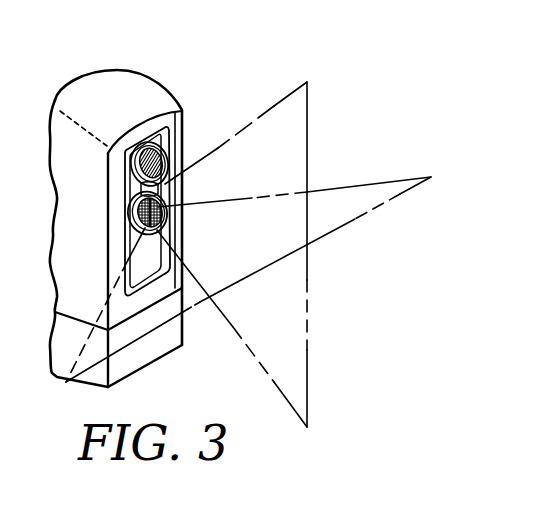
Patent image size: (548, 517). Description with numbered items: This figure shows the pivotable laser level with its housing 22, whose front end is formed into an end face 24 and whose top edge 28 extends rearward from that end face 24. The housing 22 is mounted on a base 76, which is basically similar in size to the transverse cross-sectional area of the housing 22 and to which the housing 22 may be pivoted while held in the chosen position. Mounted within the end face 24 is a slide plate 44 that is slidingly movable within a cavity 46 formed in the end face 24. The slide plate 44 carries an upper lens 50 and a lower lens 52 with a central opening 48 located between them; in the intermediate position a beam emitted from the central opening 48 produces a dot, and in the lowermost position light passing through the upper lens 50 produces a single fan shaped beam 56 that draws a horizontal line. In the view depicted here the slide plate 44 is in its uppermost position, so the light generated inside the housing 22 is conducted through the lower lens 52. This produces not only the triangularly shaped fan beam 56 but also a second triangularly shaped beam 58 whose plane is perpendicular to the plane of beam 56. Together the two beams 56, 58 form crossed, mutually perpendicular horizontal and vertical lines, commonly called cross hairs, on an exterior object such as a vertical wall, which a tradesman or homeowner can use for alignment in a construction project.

The housing 22 is at (93, 256).
The end face 24 is at (113, 164).
The top edge 28 is at (124, 96).
The slide plate 44 is at (130, 192).
The cavity 46 is at (168, 246).
The central opening 48 is at (163, 189).
The upper lens 50 is at (163, 163).
The lower lens 52 is at (167, 216).
The fan shaped beam 56 is at (344, 186).
The triangularly shaped beam 58 is at (289, 97).
The base 76 is at (150, 353).